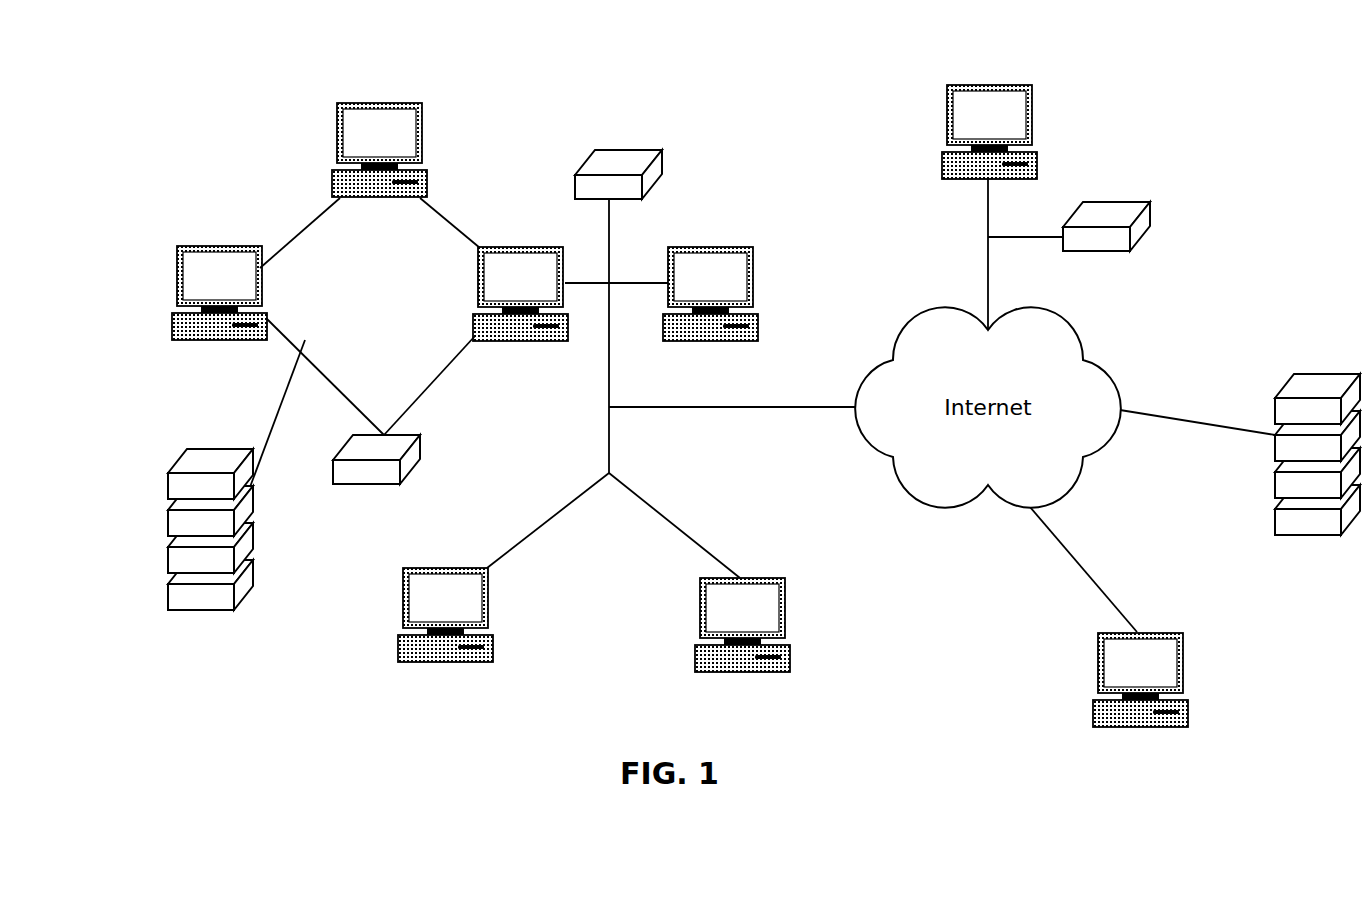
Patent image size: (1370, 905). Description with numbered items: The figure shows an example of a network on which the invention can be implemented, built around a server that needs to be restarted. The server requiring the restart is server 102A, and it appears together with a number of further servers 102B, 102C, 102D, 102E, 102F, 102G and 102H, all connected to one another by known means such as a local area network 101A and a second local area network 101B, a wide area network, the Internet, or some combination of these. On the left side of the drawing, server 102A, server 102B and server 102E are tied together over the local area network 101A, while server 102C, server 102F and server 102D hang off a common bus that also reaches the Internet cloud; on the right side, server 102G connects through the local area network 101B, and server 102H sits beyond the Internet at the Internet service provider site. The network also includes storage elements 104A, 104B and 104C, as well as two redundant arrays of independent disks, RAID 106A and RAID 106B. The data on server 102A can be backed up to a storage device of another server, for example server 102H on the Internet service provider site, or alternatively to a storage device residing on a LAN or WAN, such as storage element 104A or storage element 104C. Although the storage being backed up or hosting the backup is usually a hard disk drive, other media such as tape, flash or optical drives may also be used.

The local area network 101A is at (452, 218).
The local area network 101B is at (987, 212).
The server 102A is at (417, 105).
The server 102B is at (175, 275).
The server 102C is at (754, 268).
The server 102D is at (785, 585).
The server 102E is at (530, 342).
The server 102F is at (488, 597).
The server 102G is at (993, 85).
The server 102H is at (1182, 653).
The storage element 104A is at (363, 484).
The storage element 104B is at (617, 148).
The storage element 104C is at (1108, 202).
The RAID 106A is at (167, 493).
The RAID 106B is at (1275, 420).